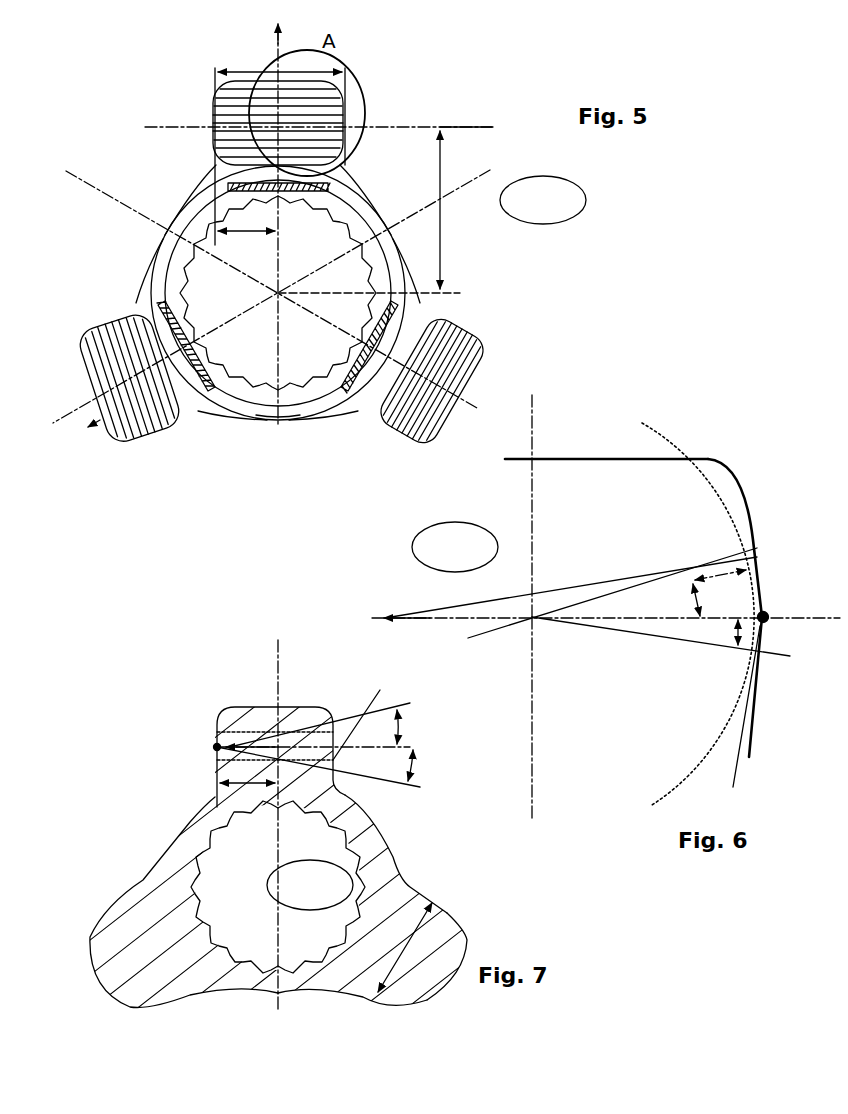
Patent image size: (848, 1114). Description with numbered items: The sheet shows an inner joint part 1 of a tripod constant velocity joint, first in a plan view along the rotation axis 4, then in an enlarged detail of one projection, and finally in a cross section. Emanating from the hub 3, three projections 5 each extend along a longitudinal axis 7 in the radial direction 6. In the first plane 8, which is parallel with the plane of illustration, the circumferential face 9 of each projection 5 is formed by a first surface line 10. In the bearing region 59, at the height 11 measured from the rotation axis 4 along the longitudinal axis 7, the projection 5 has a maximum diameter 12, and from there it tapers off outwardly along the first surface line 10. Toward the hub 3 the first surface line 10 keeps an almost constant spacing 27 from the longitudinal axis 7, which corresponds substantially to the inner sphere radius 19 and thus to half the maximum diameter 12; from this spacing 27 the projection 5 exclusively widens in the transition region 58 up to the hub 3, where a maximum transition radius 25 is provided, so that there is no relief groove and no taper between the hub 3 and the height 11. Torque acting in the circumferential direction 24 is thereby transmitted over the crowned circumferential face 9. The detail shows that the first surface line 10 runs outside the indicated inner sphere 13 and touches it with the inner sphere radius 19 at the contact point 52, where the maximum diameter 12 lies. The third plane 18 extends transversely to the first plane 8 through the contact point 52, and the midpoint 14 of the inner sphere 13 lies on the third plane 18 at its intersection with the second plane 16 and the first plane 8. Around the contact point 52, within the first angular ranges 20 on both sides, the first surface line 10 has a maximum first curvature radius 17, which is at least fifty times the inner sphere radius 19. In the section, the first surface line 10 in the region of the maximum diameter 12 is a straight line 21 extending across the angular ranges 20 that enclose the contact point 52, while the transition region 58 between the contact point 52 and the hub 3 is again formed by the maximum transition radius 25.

In FIG. 5, the inner joint part 1 is at (462, 95).
In FIG. 5, the hub 3 is at (165, 262).
In FIG. 7, the hub 3 is at (400, 880).
In FIG. 5, the rotation axis 4 is at (283, 297).
In FIG. 7, the rotation axis 4 is at (278, 887).
In FIG. 5, the projection 5 is at (216, 112).
In FIG. 6, the projection 5 is at (605, 458).
In FIG. 7, the projection 5 is at (237, 720).
In FIG. 5, the radial direction 6 is at (265, 23).
In FIG. 5, the longitudinal axis 7 is at (272, 46).
In FIG. 6, the longitudinal axis 7 is at (537, 432).
In FIG. 7, the longitudinal axis 7 is at (280, 665).
In FIG. 5, the first plane 8 is at (543, 200).
In FIG. 6, the first plane 8 is at (455, 547).
In FIG. 7, the first plane 8 is at (310, 885).
In FIG. 5, the circumferential face 9 is at (215, 140).
In FIG. 7, the circumferential face 9 is at (333, 730).
In FIG. 5, the first surface line 10 is at (345, 120).
In FIG. 6, the first surface line 10 is at (748, 500).
In FIG. 7, the first surface line 10 is at (217, 757).
In FIG. 5, the height 11 is at (442, 252).
In FIG. 5, the maximum diameter 12 is at (240, 80).
In FIG. 6, the maximum diameter 12 is at (468, 622).
In FIG. 7, the maximum diameter 12 is at (440, 913).
In FIG. 6, the inner sphere 13 is at (672, 440).
In FIG. 6, the midpoint 14 is at (470, 640).
In FIG. 6, the second plane 16 is at (534, 740).
In FIG. 6, the first curvature radius 17 is at (583, 590).
In FIG. 6, the third plane 18 is at (770, 615).
In FIG. 6, the inner sphere radius 19 is at (655, 630).
In FIG. 7, the inner sphere radius 19 is at (254, 745).
In FIG. 6, the first angular range 20 is at (685, 600).
In FIG. 7, the first angular range 20 is at (414, 765).
In FIG. 7, the straight line 21 is at (320, 719).
In FIG. 5, the circumferential direction 24 is at (92, 430).
In FIG. 5, the maximum transition radius 25 is at (213, 422).
In FIG. 7, the maximum transition radius 25 is at (415, 882).
In FIG. 5, the spacing 27 is at (210, 240).
In FIG. 7, the spacing 27 is at (217, 808).
In FIG. 6, the contact point 52 is at (766, 640).
In FIG. 7, the contact point 52 is at (214, 745).
In FIG. 5, the transition region 58 is at (345, 414).
In FIG. 7, the transition region 58 is at (150, 862).
In FIG. 5, the bearing region 59 is at (412, 420).